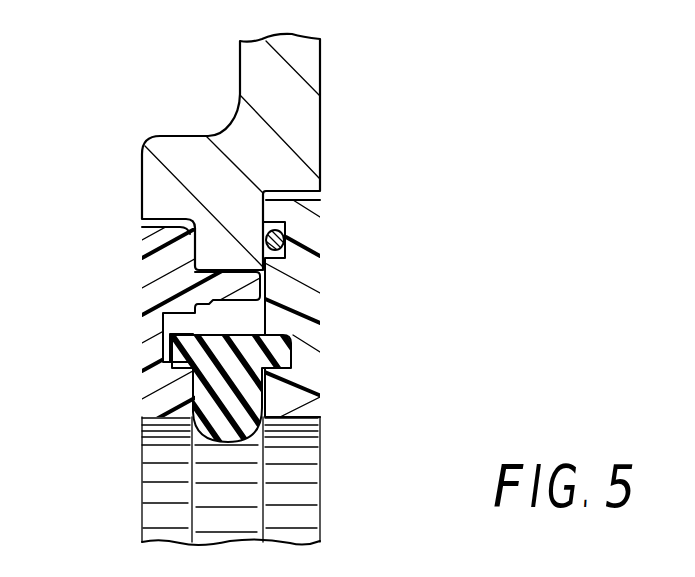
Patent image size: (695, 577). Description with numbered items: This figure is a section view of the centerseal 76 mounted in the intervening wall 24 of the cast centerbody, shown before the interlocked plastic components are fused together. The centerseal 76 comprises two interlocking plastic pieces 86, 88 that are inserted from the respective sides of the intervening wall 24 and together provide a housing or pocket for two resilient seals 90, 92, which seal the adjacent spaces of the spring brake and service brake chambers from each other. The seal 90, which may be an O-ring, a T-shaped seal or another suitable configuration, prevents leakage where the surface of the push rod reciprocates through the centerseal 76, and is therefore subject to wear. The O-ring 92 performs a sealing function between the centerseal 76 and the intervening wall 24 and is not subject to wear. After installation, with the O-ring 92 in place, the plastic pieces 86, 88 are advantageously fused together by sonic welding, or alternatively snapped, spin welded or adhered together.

The intervening wall 24 is at (310, 124).
The centerseal 76 is at (104, 239).
The interlocking plastic piece 86 is at (152, 296).
The interlocking plastic piece 88 is at (305, 305).
The seal 90 is at (207, 428).
The O-ring 92 is at (290, 232).